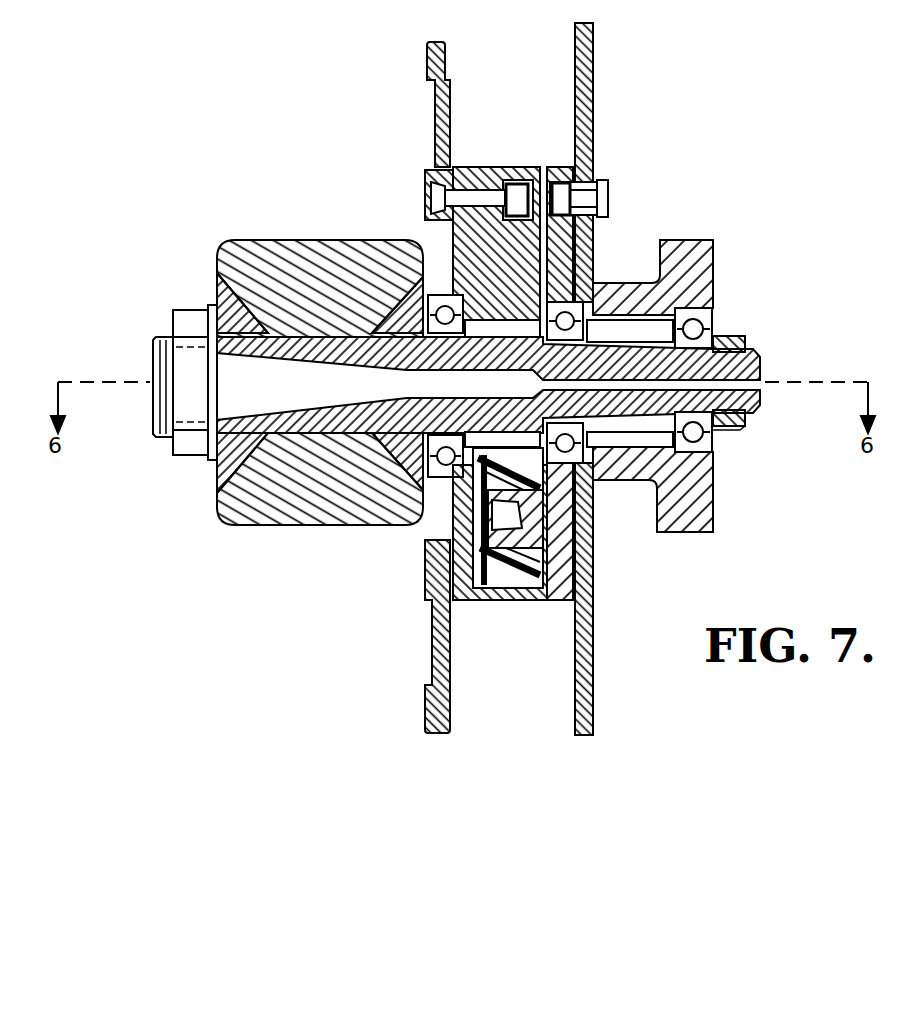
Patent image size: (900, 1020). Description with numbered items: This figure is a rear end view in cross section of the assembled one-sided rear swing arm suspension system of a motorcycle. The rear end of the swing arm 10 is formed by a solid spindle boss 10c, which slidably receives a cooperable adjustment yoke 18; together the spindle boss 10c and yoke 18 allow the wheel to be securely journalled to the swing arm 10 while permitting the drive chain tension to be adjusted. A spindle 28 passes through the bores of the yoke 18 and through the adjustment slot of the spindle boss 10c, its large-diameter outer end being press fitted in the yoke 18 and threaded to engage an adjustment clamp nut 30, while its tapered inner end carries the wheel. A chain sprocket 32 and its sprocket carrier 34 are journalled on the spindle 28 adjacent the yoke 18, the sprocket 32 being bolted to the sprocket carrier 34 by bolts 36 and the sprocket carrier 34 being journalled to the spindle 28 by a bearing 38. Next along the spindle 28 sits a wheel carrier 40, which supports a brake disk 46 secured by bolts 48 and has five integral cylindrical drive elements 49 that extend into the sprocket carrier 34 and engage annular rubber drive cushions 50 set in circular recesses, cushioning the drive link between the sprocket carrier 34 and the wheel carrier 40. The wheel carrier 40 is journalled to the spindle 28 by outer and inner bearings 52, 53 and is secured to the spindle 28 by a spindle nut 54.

The one-sided rear swing arm 10 is at (288, 224).
The spindle boss 10c is at (322, 527).
The adjustment yoke 18 is at (191, 489).
The spindle 28 is at (615, 480).
The adjustment clamp nut 30 is at (193, 309).
The chain sprocket 32 is at (432, 665).
The sprocket carrier 34 is at (517, 167).
The bolts 36 is at (470, 167).
The bearing 38 is at (425, 282).
The wheel carrier 40 is at (682, 240).
The brake disk 46 is at (593, 88).
The bolts 48 is at (600, 185).
The cylindrical drive elements 49 is at (445, 523).
The rubber drive cushions 50 is at (505, 600).
The outer bearing 52 is at (722, 443).
The inner bearing 53 is at (582, 270).
The spindle nut 54 is at (738, 337).